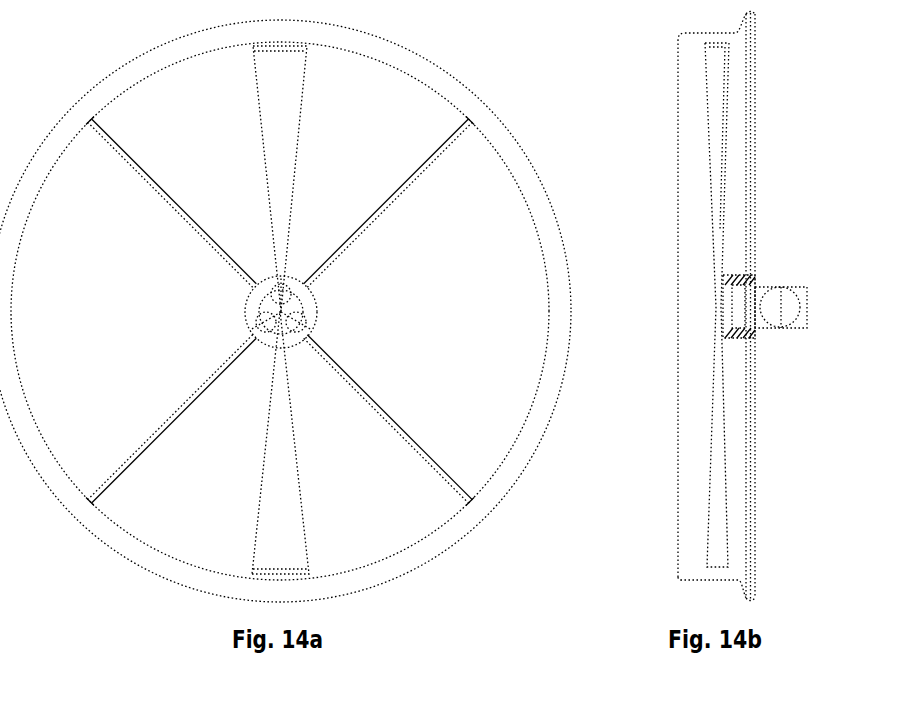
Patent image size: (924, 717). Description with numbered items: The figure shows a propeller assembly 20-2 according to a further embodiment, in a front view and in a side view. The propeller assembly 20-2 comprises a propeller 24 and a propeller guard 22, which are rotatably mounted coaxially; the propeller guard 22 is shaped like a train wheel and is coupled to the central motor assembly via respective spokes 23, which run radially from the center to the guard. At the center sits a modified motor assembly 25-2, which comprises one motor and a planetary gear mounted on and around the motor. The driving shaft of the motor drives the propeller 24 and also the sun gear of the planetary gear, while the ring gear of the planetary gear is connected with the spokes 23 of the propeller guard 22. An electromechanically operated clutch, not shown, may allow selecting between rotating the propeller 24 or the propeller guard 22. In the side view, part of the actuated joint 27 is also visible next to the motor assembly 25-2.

In FIG. 14A, the propeller assembly 20-2 is at (474, 109).
In FIG. 14B, the propeller assembly 20-2 is at (688, 114).
In FIG. 14A, the propeller guard 22 is at (535, 425).
In FIG. 14B, the propeller guard 22 is at (690, 447).
In FIG. 14A, the spokes 23 is at (157, 195).
In FIG. 14A, the propeller 24 is at (283, 137).
In FIG. 14B, the propeller 24 is at (690, 520).
In FIG. 14A, the modified motor assembly 25-2 is at (266, 314).
In FIG. 14B, the modified motor assembly 25-2 is at (735, 308).
In FIG. 14B, the actuated joint 27 is at (774, 305).